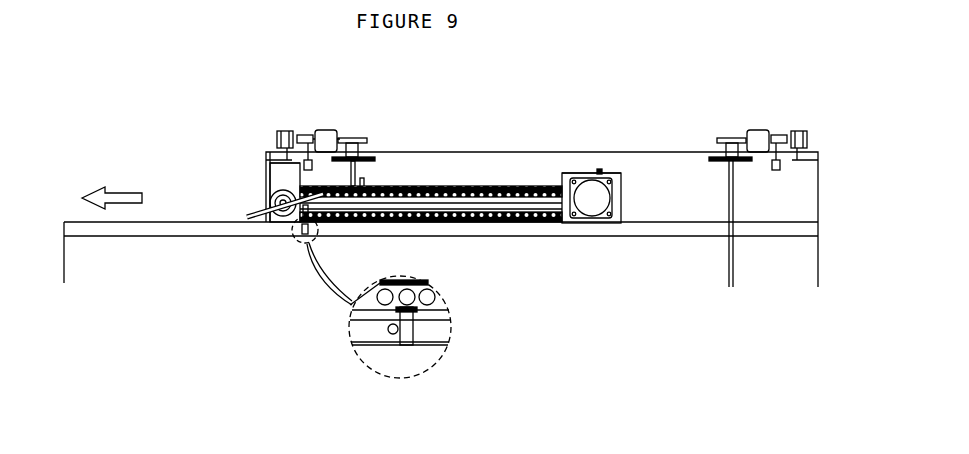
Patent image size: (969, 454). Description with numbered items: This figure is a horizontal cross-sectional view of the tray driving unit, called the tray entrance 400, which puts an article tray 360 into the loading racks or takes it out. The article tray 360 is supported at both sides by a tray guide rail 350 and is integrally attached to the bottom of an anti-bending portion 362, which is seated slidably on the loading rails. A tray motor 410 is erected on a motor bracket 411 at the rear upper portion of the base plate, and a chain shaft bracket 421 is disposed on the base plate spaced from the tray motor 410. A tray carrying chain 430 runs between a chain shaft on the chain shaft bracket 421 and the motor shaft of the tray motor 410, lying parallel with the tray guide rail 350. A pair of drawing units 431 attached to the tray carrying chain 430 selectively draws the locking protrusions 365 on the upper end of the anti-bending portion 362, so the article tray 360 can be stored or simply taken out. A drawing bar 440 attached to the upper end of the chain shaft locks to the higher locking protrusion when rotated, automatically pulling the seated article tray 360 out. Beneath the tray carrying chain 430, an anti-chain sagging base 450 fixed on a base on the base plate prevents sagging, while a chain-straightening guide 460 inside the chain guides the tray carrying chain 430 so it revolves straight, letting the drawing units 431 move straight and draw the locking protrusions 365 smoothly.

The tray guide rail 350 is at (763, 230).
The article tray 360 is at (110, 262).
The anti-bending portion 362 is at (358, 328).
The locking protrusion 365 is at (390, 334).
The tray entrance 400 is at (515, 162).
The tray motor 410 is at (583, 219).
The motor bracket 411 is at (618, 175).
The chain shaft bracket 421 is at (277, 186).
The tray carrying chain 430 is at (467, 223).
The drawing unit 431 is at (405, 342).
The drawing bar 440 is at (247, 218).
The anti-chain sagging base 450 is at (378, 200).
The chain-straightening guide 460 is at (478, 212).